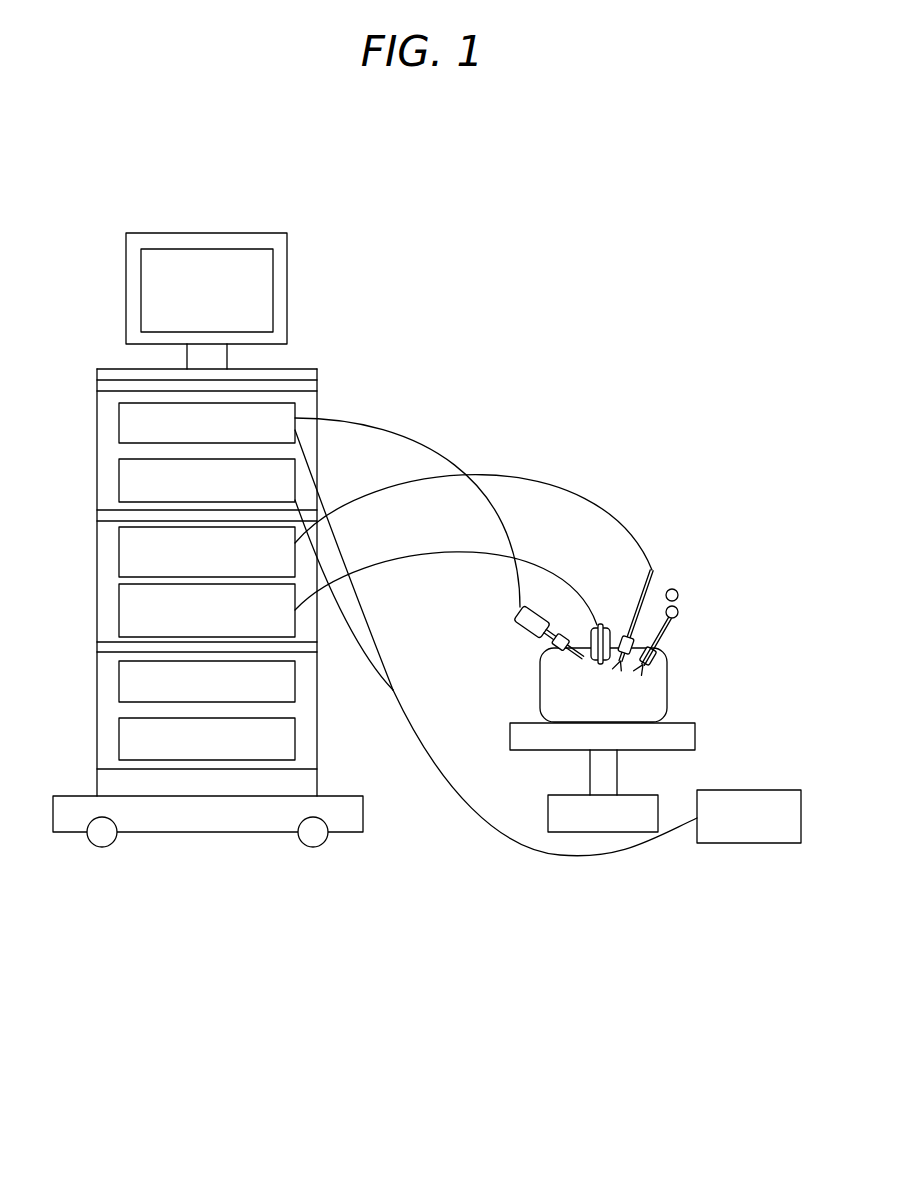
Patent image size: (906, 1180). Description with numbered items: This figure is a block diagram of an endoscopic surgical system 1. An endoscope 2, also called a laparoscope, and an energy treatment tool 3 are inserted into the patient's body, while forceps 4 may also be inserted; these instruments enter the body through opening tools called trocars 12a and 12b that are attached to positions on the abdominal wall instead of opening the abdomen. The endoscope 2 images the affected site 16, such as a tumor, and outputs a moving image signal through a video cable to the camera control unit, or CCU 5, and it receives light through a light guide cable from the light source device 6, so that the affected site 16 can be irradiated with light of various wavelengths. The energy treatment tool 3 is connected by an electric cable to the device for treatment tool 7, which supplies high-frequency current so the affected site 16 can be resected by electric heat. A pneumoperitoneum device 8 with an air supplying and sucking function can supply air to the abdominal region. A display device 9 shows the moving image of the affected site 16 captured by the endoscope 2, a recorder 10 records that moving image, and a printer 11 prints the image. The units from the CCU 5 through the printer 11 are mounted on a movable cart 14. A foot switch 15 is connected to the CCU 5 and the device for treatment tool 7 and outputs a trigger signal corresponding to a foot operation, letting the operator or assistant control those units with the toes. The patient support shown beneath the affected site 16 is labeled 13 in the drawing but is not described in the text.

The endoscopic surgical system 1 is at (337, 934).
The endoscope 2 is at (517, 611).
The energy treatment tool 3 is at (638, 597).
The forceps 4 is at (681, 592).
The camera control unit (CCU) 5 is at (119, 423).
The light source device 6 is at (119, 480).
The device for treatment tool 7 is at (119, 551).
The pneumoperitoneum device 8 is at (119, 608).
The display device 9 is at (203, 233).
The recorder 10 is at (119, 680).
The printer 11 is at (119, 736).
The trocar 12a is at (548, 643).
The trocar 12b is at (655, 650).
The operating table 13 is at (510, 735).
The cart 14 is at (337, 796).
The foot switch 15 is at (748, 790).
The affected site 16 is at (660, 700).